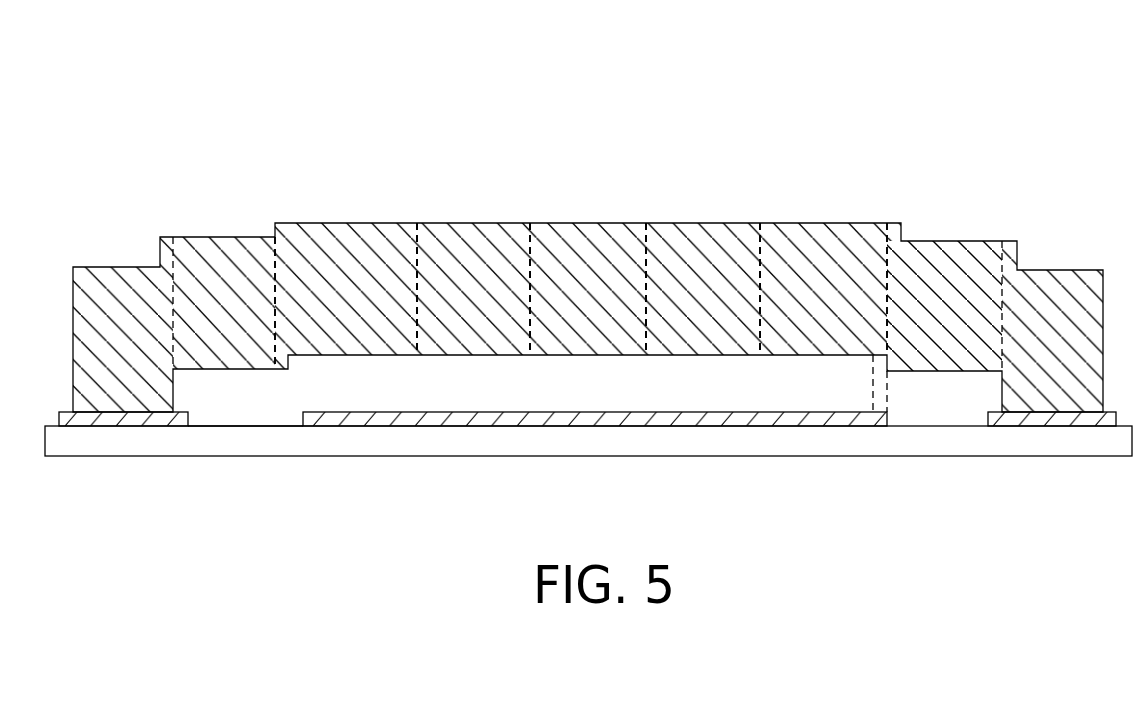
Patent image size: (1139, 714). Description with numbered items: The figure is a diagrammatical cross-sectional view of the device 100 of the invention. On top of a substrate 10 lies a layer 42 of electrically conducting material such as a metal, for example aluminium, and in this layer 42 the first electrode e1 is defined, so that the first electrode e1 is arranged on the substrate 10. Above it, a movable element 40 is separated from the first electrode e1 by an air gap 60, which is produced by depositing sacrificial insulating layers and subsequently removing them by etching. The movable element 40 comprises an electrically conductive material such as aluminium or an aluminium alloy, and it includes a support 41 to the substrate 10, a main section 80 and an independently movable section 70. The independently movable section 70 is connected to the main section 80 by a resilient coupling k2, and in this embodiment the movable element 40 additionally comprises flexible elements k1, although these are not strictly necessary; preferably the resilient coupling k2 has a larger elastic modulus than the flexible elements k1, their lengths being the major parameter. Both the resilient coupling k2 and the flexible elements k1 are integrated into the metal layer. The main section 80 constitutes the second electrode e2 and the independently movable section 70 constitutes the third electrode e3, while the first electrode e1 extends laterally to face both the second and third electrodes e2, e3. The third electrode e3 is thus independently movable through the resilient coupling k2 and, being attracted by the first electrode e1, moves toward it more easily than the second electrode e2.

The device 100 is at (186, 141).
The substrate 10 is at (997, 459).
The movable element 40 is at (709, 212).
The support 41 is at (118, 292).
The layer of electrically conducting material 42 is at (104, 420).
The air gap 60 is at (254, 410).
The independently movable section 70 is at (579, 247).
The main section 80 is at (350, 247).
The first electrode e1 is at (707, 420).
The second electrode e2 is at (581, 296).
The third electrode e3 is at (588, 289).
The flexible elements k1 is at (587, 304).
The resilient coupling k2 is at (588, 289).